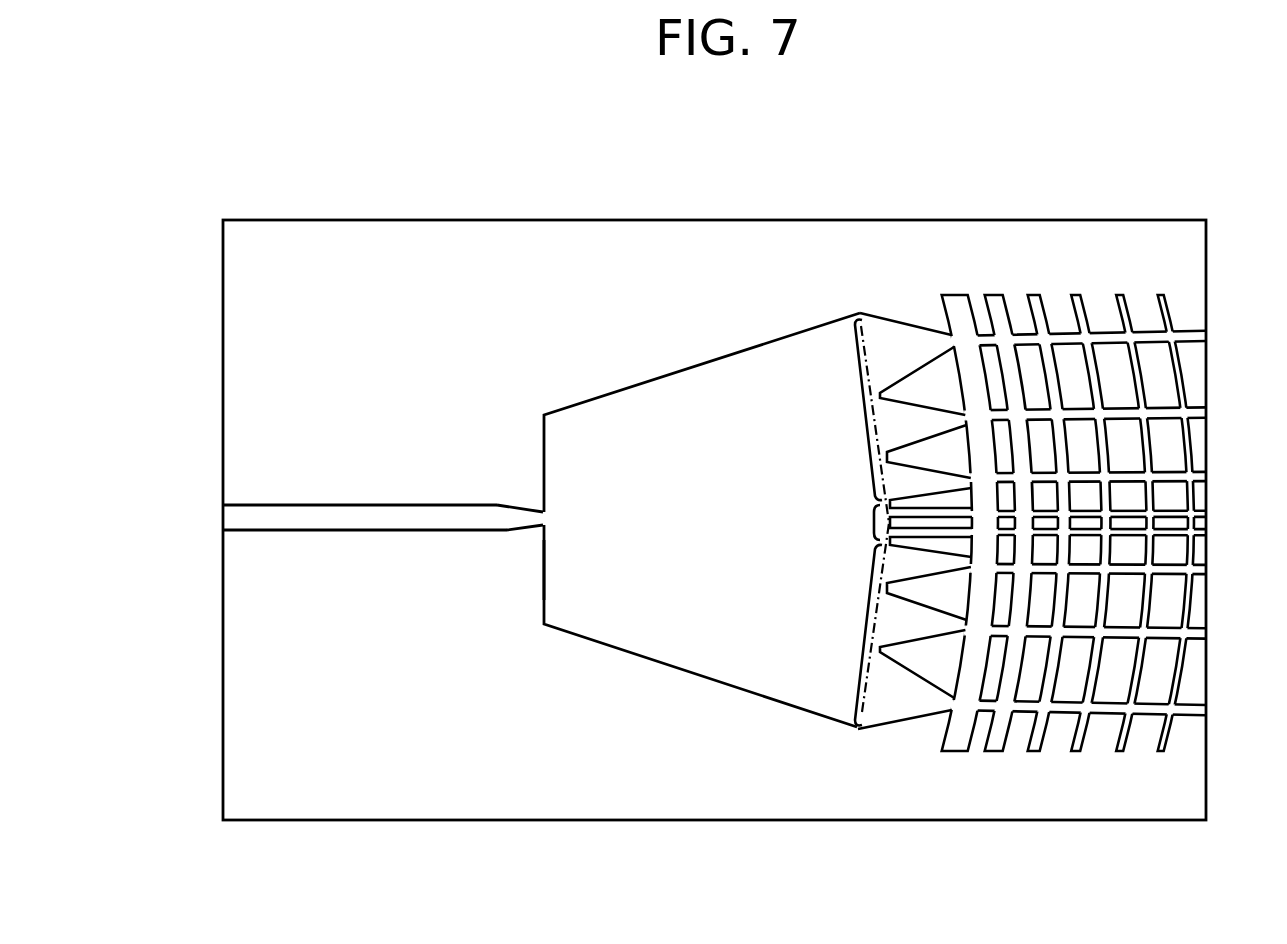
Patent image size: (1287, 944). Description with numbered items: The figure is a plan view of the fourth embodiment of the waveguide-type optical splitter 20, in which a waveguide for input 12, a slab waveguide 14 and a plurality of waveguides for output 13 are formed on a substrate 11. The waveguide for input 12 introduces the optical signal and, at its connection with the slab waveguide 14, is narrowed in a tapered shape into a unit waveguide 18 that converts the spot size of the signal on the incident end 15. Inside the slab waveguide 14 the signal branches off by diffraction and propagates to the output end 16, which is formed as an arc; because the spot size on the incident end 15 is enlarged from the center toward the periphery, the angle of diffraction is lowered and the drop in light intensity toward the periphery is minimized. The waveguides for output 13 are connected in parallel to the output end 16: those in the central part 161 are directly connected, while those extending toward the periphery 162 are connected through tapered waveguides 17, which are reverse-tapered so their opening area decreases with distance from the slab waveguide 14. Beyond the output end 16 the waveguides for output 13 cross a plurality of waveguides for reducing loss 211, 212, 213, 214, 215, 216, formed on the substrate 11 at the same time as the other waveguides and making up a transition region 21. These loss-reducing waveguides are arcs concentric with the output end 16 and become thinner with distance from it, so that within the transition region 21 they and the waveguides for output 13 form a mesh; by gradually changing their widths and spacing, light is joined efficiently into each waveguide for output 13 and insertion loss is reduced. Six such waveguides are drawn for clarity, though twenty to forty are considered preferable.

The antenna device 20 is at (345, 205).
The substrate 11 is at (398, 780).
The waveguide for input 12 is at (248, 505).
The unit waveguide 18 is at (520, 530).
The slab waveguide 14 is at (695, 654).
The incident end 15 is at (545, 590).
The output end 16 is at (862, 712).
The central part 161 is at (872, 519).
The periphery 162 is at (859, 413).
The tapered waveguide 17 is at (907, 722).
The waveguides for output 13 is at (1185, 718).
The transition region 21 is at (1148, 139).
The waveguide for reducing loss 211 is at (953, 293).
The waveguide for reducing loss 212 is at (995, 293).
The waveguide for reducing loss 213 is at (1033, 293).
The waveguide for reducing loss 214 is at (1077, 293).
The waveguide for reducing loss 215 is at (1118, 293).
The waveguide for reducing loss 216 is at (1162, 293).